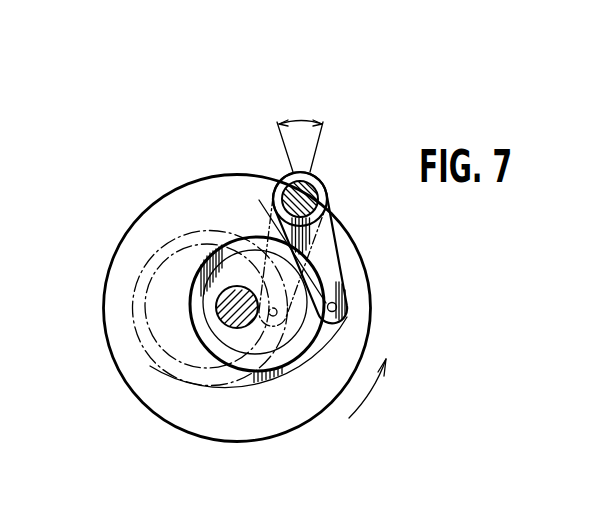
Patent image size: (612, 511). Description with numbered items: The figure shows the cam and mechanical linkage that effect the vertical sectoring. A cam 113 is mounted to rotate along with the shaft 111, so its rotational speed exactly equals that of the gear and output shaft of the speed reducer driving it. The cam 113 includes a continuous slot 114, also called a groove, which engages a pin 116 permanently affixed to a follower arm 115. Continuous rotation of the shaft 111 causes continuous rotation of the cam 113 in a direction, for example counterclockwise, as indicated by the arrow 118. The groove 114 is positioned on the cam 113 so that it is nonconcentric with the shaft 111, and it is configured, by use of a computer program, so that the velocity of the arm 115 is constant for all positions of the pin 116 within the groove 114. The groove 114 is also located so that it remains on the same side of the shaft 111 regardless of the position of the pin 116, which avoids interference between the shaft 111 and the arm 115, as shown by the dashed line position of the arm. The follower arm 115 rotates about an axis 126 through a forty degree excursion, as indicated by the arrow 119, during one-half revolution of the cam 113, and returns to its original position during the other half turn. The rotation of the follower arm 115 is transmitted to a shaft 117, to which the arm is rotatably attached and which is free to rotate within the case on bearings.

The shaft 111 is at (223, 316).
The cam 113 is at (121, 369).
The slot 114 is at (283, 377).
The follower arm 115 is at (341, 240).
The pin 116 is at (339, 309).
The shaft 117 is at (319, 198).
The arrow 118 is at (355, 382).
The arrow 119 is at (309, 125).
The axis 126 is at (284, 201).